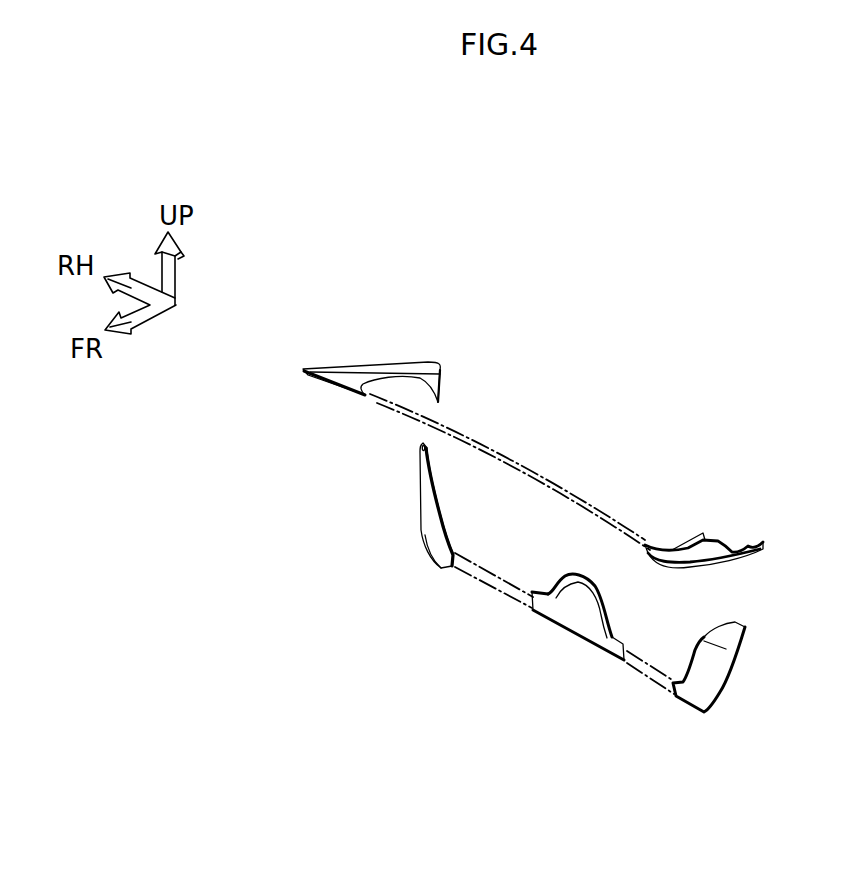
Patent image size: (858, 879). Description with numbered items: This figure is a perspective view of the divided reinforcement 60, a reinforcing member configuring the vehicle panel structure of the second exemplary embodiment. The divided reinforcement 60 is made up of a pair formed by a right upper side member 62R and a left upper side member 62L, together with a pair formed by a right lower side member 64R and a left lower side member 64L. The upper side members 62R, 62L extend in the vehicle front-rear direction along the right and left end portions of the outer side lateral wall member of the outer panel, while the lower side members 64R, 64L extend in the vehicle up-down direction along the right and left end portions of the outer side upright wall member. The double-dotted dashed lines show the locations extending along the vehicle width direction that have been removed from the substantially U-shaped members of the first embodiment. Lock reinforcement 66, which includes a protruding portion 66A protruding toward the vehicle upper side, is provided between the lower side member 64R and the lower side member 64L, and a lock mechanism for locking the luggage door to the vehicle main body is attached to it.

The divided reinforcement 60 is at (278, 308).
The right upper side member 62R is at (388, 362).
The left upper side member 62L is at (696, 534).
The right lower side member 64R is at (422, 538).
The left lower side member 64L is at (718, 686).
The lock reinforcement 66 is at (553, 623).
The protruding portion 66A is at (571, 576).